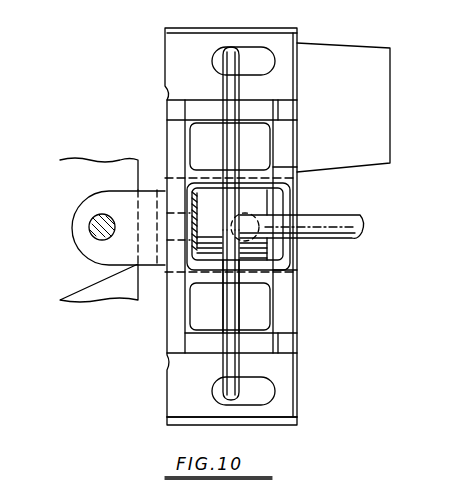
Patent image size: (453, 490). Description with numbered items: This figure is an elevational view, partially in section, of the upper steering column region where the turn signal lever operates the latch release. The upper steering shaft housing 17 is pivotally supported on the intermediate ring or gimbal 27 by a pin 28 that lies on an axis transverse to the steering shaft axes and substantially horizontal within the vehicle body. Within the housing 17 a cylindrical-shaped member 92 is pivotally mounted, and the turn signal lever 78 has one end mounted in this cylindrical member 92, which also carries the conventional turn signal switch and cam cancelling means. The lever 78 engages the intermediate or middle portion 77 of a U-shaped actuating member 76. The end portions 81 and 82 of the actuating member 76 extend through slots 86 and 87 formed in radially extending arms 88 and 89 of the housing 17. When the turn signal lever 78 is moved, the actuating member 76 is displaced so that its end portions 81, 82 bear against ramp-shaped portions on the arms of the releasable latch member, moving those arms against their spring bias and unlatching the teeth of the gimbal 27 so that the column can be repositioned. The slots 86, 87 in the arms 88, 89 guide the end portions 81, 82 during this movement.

The upper steering shaft housing 17 is at (250, 152).
The intermediate ring or gimbal 27 is at (83, 168).
The pin 28 is at (90, 232).
The U-shaped actuating member 76 is at (243, 313).
The intermediate or middle portion 77 is at (237, 235).
The turn signal lever 78 is at (347, 221).
The end portion 81 is at (222, 56).
The end portion 82 is at (225, 395).
The slot 86 is at (259, 52).
The slot 87 is at (285, 407).
The radially extending arm 88 is at (164, 30).
The radially extending arm 89 is at (297, 423).
The cylindrical-shaped member 92 is at (210, 235).